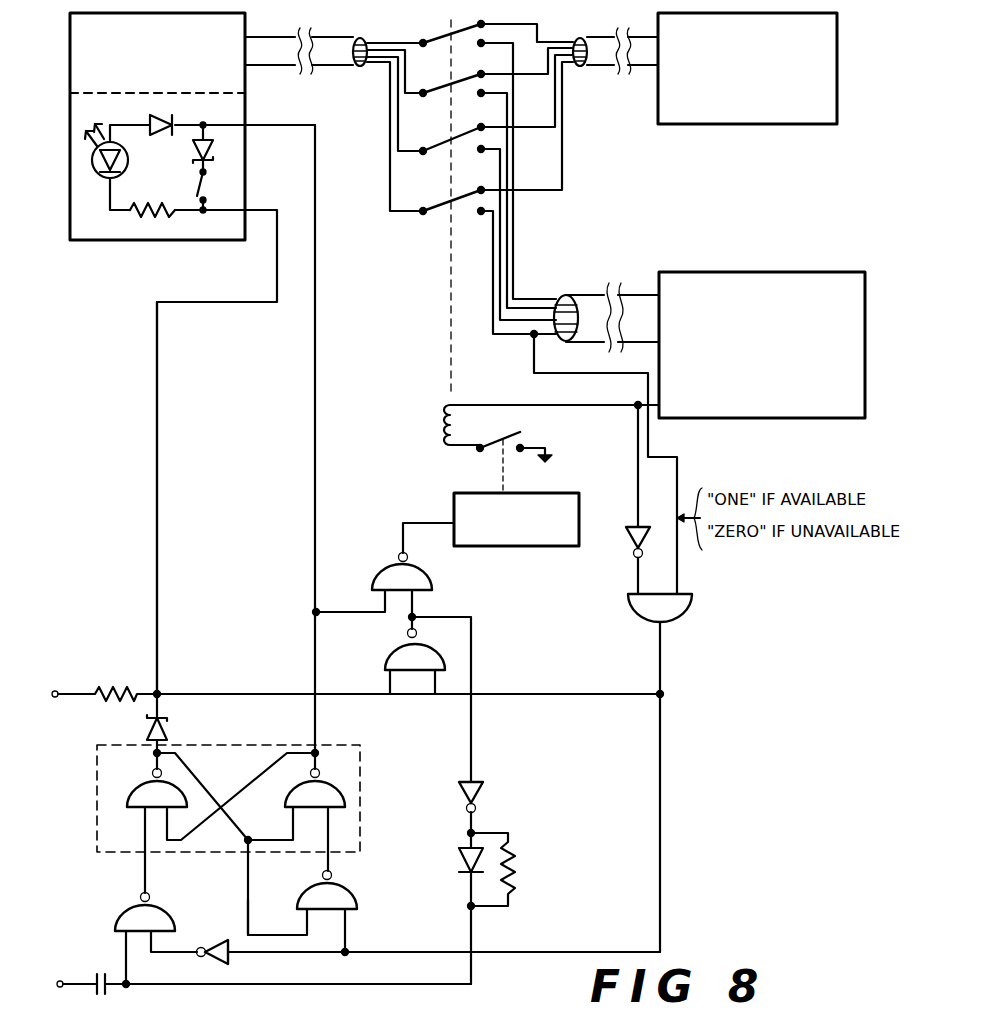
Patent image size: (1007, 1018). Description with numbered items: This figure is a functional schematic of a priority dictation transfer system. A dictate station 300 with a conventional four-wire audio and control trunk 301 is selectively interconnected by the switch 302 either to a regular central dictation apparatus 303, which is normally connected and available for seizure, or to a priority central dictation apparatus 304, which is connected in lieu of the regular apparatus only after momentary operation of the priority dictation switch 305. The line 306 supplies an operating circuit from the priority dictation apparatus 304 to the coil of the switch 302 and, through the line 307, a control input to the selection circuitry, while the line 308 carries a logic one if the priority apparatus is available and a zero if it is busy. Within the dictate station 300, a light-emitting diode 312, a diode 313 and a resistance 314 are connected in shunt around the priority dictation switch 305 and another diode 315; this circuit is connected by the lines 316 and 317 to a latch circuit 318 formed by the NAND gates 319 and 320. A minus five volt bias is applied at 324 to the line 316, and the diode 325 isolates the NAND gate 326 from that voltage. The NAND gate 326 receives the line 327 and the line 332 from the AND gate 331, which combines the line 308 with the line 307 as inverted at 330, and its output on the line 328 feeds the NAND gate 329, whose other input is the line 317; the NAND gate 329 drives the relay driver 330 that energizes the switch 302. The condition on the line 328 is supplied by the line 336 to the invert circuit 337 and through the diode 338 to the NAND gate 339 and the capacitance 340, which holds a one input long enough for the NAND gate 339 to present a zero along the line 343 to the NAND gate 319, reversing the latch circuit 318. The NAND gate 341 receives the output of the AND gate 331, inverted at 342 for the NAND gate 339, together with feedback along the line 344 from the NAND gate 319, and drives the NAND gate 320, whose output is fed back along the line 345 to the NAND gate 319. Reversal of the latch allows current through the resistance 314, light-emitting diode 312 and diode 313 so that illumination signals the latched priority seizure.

The dictate station 300 is at (69, 70).
The four-wire audio and control trunk 301 is at (276, 35).
The switch 302 is at (442, 24).
The regular central dictation apparatus 303 is at (795, 125).
The priority central dictation apparatus 304 is at (808, 272).
The priority dictation switch 305 is at (196, 183).
The line 306 is at (462, 405).
The line 307 is at (637, 492).
The line 308 is at (607, 373).
The light-emitting diode 312 is at (93, 167).
The diode 313 is at (152, 120).
The resistance 314 is at (148, 222).
The diode 315 is at (192, 150).
The line 316 is at (158, 372).
The line 317 is at (316, 372).
The latch circuit 318 is at (96, 840).
The NAND gate 319 is at (128, 796).
The NAND gate 320 is at (346, 796).
The bias source 324 is at (75, 693).
The diode 325 is at (168, 733).
The NAND gate 326 is at (388, 650).
The line 327 is at (210, 693).
The line 328 is at (420, 606).
The NAND gate 329 is at (431, 574).
The relay driver 330 is at (461, 493).
The AND gate 331 is at (682, 620).
The line 332 is at (600, 694).
The line 336 is at (472, 728).
The invert circuit 337 is at (484, 794).
The diode 338 is at (458, 858).
The NAND gate 339 is at (121, 905).
The capacitance 340 is at (97, 972).
The NAND gate 341 is at (303, 888).
The inverter 342 is at (214, 960).
The line 343 is at (144, 870).
The line 344 is at (247, 912).
The line 345 is at (254, 780).